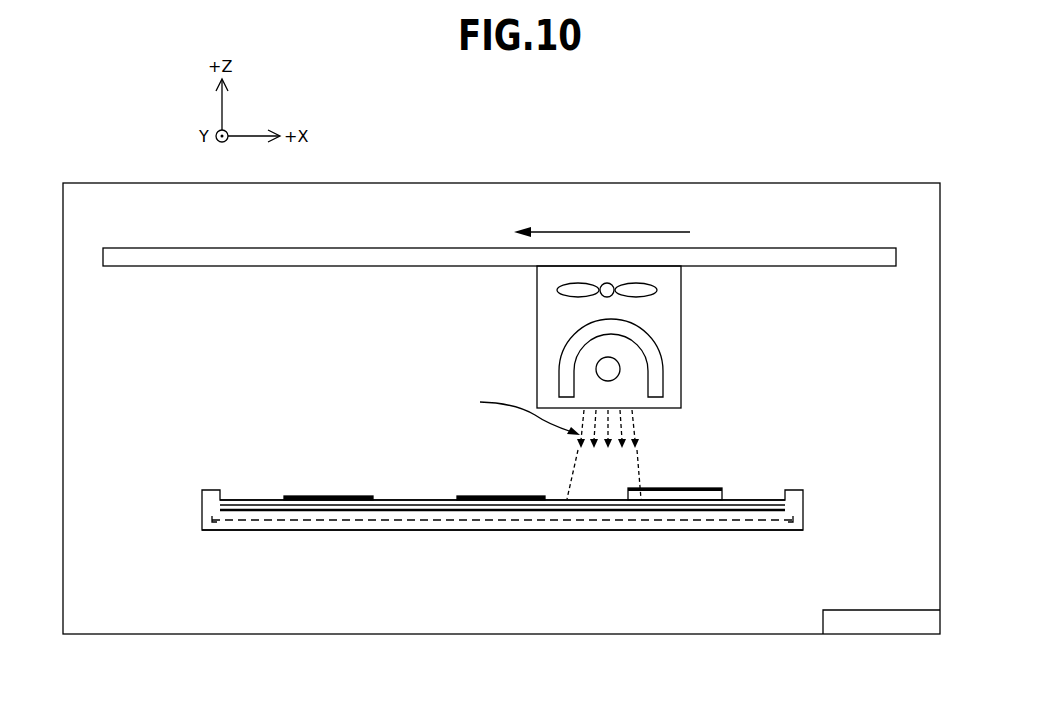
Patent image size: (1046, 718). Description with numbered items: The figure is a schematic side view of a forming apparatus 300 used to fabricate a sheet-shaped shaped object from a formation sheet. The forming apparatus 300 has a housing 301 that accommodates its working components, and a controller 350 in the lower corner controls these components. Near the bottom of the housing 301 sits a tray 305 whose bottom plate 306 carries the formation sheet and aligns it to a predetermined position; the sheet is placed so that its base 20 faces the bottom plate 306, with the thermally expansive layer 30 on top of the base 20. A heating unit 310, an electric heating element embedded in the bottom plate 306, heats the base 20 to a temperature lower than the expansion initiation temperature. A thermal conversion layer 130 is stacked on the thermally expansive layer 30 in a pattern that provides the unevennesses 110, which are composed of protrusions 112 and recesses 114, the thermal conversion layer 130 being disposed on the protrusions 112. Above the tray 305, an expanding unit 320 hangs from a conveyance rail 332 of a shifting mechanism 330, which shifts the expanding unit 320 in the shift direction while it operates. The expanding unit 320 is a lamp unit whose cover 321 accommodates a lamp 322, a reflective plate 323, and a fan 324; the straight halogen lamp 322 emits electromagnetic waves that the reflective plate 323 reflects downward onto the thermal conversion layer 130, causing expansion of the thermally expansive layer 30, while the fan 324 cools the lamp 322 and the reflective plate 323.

The forming apparatus 300 is at (755, 130).
The housing 301 is at (867, 183).
The controller 350 is at (853, 610).
The conveyance rail 332 is at (177, 248).
The shifting mechanism 330 is at (499, 233).
The expanding unit 320 is at (765, 277).
The cover 321 is at (681, 320).
The lamp 322 is at (620, 371).
The reflective plate 323 is at (663, 345).
The fan 324 is at (657, 290).
The tray 305 is at (536, 516).
The bottom plate 306 is at (570, 530).
The heating unit 310 is at (744, 523).
The base 20 is at (253, 505).
The thermally expansive layer 30 is at (412, 500).
The thermal conversion layer 130 is at (300, 496).
The unevennesses 110 is at (792, 435).
The protrusions 112 is at (722, 497).
The recesses 114 is at (760, 497).